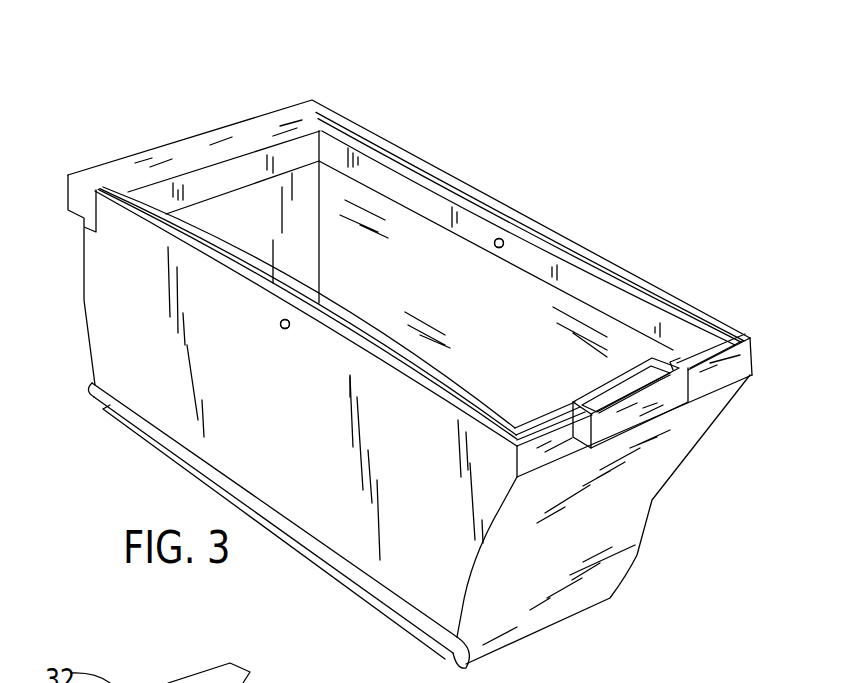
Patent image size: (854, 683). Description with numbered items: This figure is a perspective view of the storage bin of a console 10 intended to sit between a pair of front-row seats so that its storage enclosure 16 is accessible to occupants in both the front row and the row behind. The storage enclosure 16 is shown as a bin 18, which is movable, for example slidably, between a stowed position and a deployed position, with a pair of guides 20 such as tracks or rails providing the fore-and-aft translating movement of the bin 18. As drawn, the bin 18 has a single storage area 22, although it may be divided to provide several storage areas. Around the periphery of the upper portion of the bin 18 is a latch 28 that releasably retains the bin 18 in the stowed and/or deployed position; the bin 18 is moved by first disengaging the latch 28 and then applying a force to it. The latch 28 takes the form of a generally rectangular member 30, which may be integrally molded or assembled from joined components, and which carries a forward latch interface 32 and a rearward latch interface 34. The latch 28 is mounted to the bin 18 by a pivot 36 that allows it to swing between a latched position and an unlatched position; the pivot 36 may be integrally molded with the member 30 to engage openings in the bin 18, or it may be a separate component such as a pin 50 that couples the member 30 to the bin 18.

The console 10 is at (272, 78).
The storage enclosure 16 is at (535, 172).
The bin 18 is at (413, 573).
The guides 20 is at (623, 578).
The storage area 22 is at (257, 222).
The latch 28 is at (662, 440).
The member 30 is at (572, 262).
The forward latch interface 32 is at (123, 167).
The rearward latch interface 34 is at (613, 390).
The pivot 36 is at (502, 249).
The pin 50 is at (494, 246).